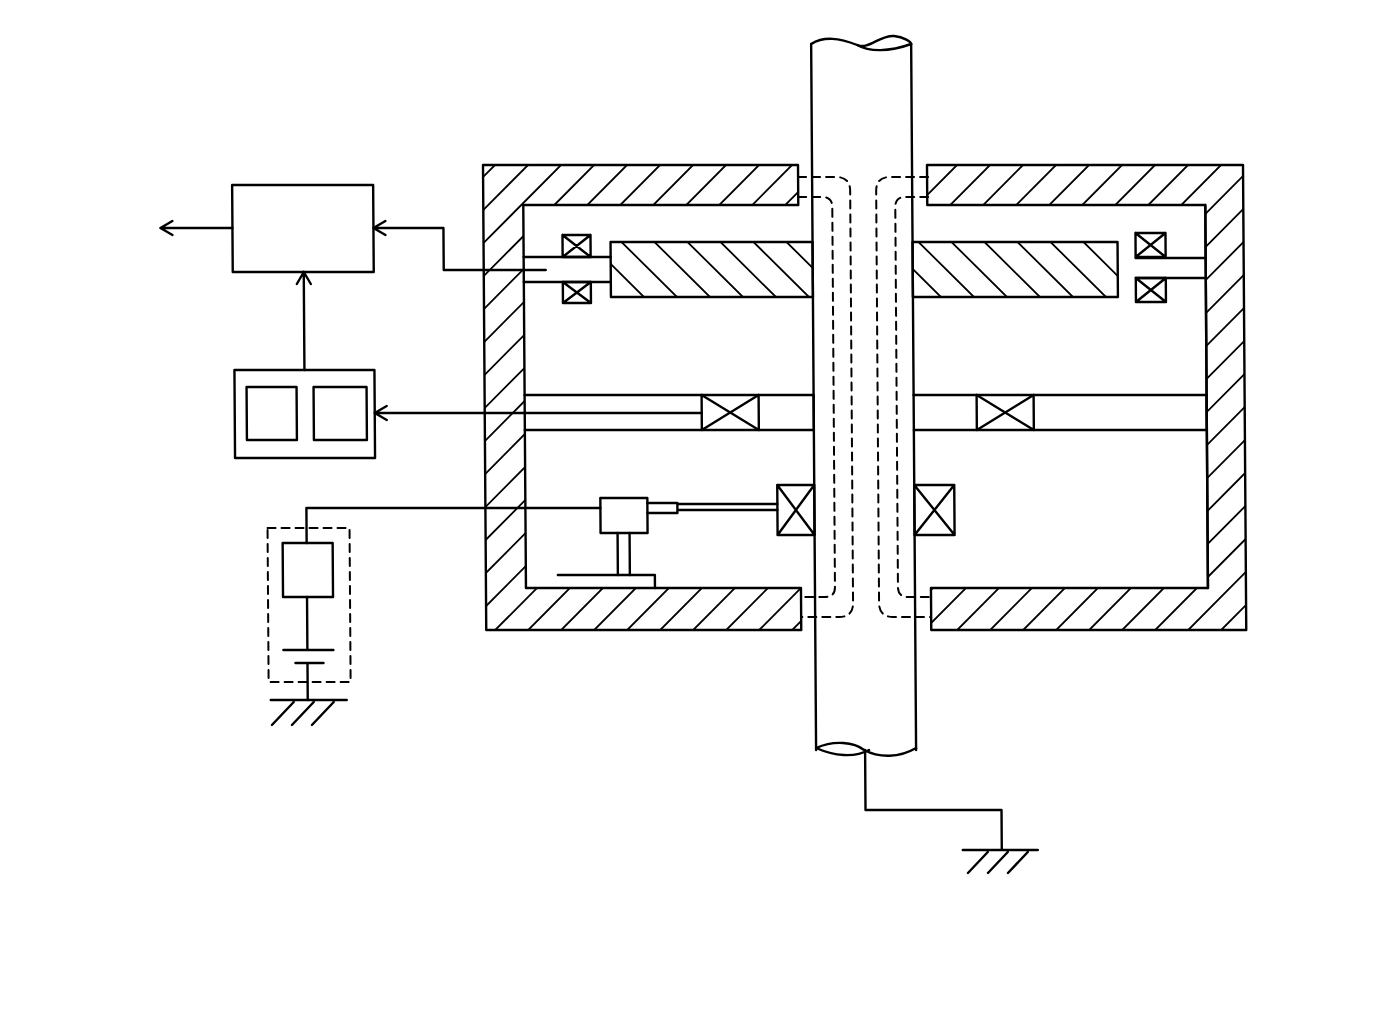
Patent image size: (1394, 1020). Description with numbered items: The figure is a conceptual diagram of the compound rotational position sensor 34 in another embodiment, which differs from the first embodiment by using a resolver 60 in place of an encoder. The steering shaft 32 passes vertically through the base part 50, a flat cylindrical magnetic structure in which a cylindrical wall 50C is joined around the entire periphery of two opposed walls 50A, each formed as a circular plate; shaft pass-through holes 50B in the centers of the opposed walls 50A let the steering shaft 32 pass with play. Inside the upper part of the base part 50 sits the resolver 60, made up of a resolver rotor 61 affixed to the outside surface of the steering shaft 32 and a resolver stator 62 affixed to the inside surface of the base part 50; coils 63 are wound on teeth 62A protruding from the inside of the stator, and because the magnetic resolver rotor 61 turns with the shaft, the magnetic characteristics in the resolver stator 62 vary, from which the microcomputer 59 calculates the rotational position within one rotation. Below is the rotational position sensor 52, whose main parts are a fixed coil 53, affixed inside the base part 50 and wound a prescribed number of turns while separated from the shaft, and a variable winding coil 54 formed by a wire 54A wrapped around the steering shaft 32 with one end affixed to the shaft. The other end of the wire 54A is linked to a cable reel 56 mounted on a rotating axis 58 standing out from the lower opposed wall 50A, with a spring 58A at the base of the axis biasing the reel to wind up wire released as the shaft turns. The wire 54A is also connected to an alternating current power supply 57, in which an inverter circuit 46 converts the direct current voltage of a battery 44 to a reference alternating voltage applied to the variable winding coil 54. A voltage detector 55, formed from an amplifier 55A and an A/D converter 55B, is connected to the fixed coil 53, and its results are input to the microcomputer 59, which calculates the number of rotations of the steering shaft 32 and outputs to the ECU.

The steering shaft 32 is at (897, 88).
The compound rotational position sensor 34 is at (607, 113).
The battery 44 is at (280, 655).
The inverter circuit 46 is at (287, 567).
The base part 50 is at (1245, 197).
The opposed walls 50A is at (1092, 178).
The shaft pass-through holes 50B is at (917, 177).
The cylindrical wall 50C is at (1235, 365).
The rotational position sensor 52 is at (1047, 498).
The fixed coil 53 is at (1003, 428).
The variable winding coil 54 is at (958, 514).
The wire 54A is at (725, 511).
The voltage detector 55 is at (245, 450).
The amplifier 55A is at (355, 395).
The A/D converter 55B is at (237, 393).
The cable reel 56 is at (602, 552).
The alternating current power supply 57 is at (347, 610).
The rotating axis 58 is at (630, 555).
The spring 58A is at (621, 550).
The microcomputer 59 is at (355, 267).
The resolver 60 is at (1120, 240).
The resolver rotor 61 is at (1036, 299).
The resolver stator 62 is at (1185, 267).
The teeth 62A is at (580, 268).
The coils 63 is at (588, 293).